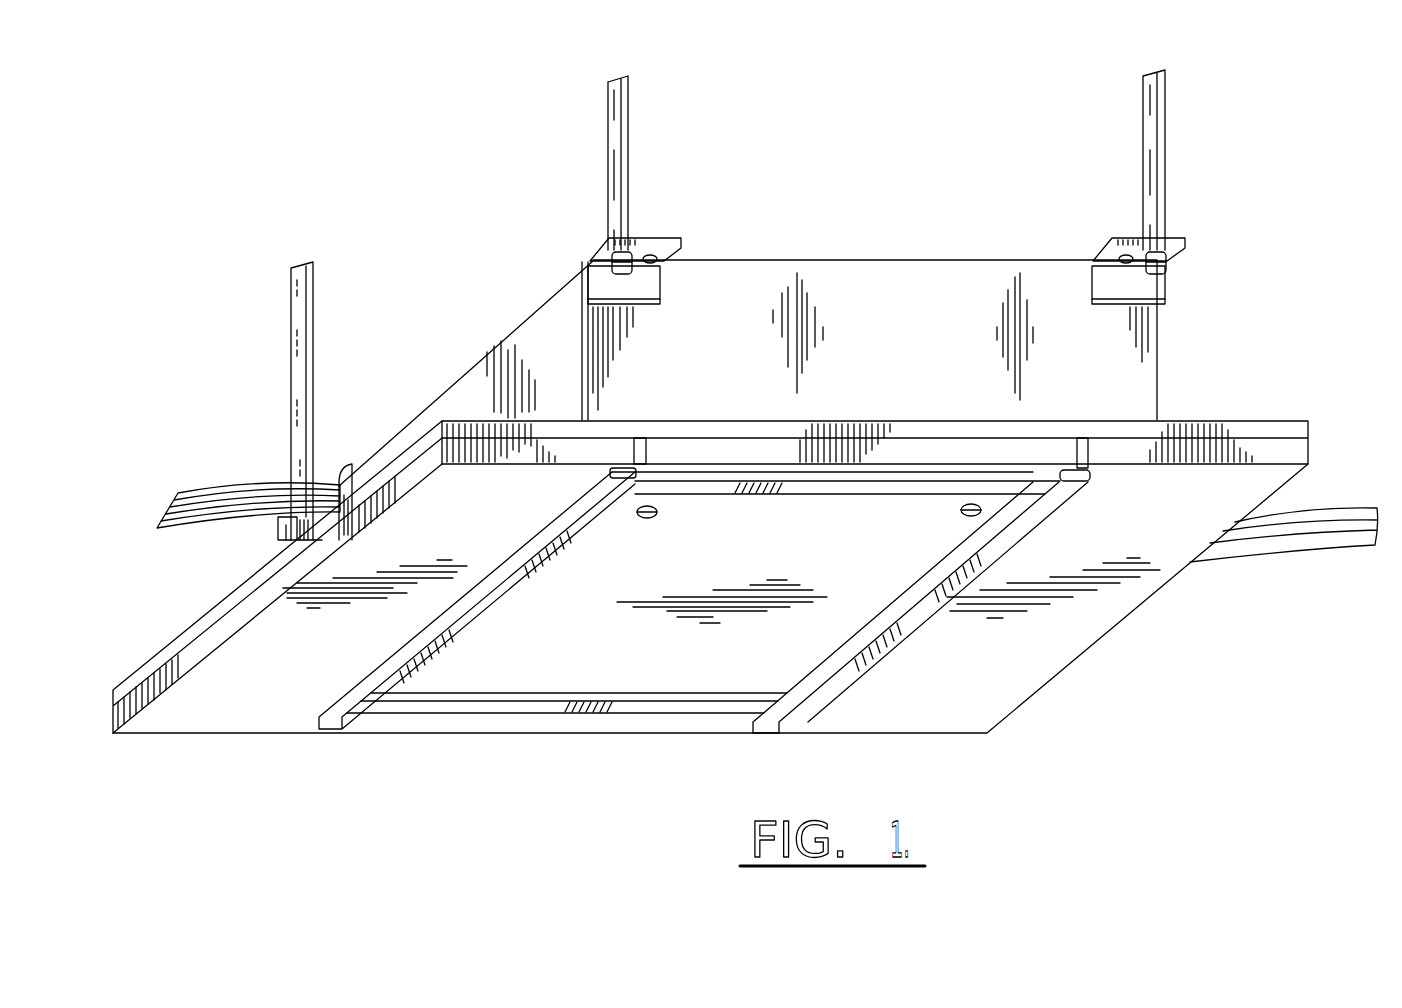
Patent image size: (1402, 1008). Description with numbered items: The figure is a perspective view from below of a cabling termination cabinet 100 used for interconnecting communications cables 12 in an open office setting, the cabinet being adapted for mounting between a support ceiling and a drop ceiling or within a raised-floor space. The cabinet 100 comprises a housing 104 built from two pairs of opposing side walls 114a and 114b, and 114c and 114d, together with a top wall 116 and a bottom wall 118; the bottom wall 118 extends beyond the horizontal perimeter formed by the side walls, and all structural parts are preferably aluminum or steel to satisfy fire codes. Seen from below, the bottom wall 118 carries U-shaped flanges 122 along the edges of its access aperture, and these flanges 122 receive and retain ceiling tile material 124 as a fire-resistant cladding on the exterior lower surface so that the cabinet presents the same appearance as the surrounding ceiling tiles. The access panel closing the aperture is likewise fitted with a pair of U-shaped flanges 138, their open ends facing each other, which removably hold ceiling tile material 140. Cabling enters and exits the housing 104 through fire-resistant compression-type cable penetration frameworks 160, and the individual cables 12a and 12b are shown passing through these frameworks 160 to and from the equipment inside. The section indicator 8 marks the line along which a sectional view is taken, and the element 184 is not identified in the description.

The cabling termination cabinet 100 is at (1232, 325).
The housing 104 is at (521, 296).
The top wall 116 is at (695, 257).
The side wall 114a is at (1160, 323).
The side wall 114b is at (477, 382).
The side wall 114c is at (742, 296).
The side wall 114d is at (284, 538).
The bottom wall 118 is at (1255, 432).
The ceiling tile material 124 is at (213, 714).
The U-shaped flanges 138 is at (402, 683).
The ceiling tile material 140 is at (472, 676).
The U-shaped flanges 122 is at (810, 706).
The fastener 184 is at (649, 514).
The cable penetration frameworks 160 is at (327, 450).
The communications cables 12 is at (744, 504).
The cable 12a is at (1253, 555).
The cable 12b is at (192, 488).
The section line 8- 8 is at (1053, 223).